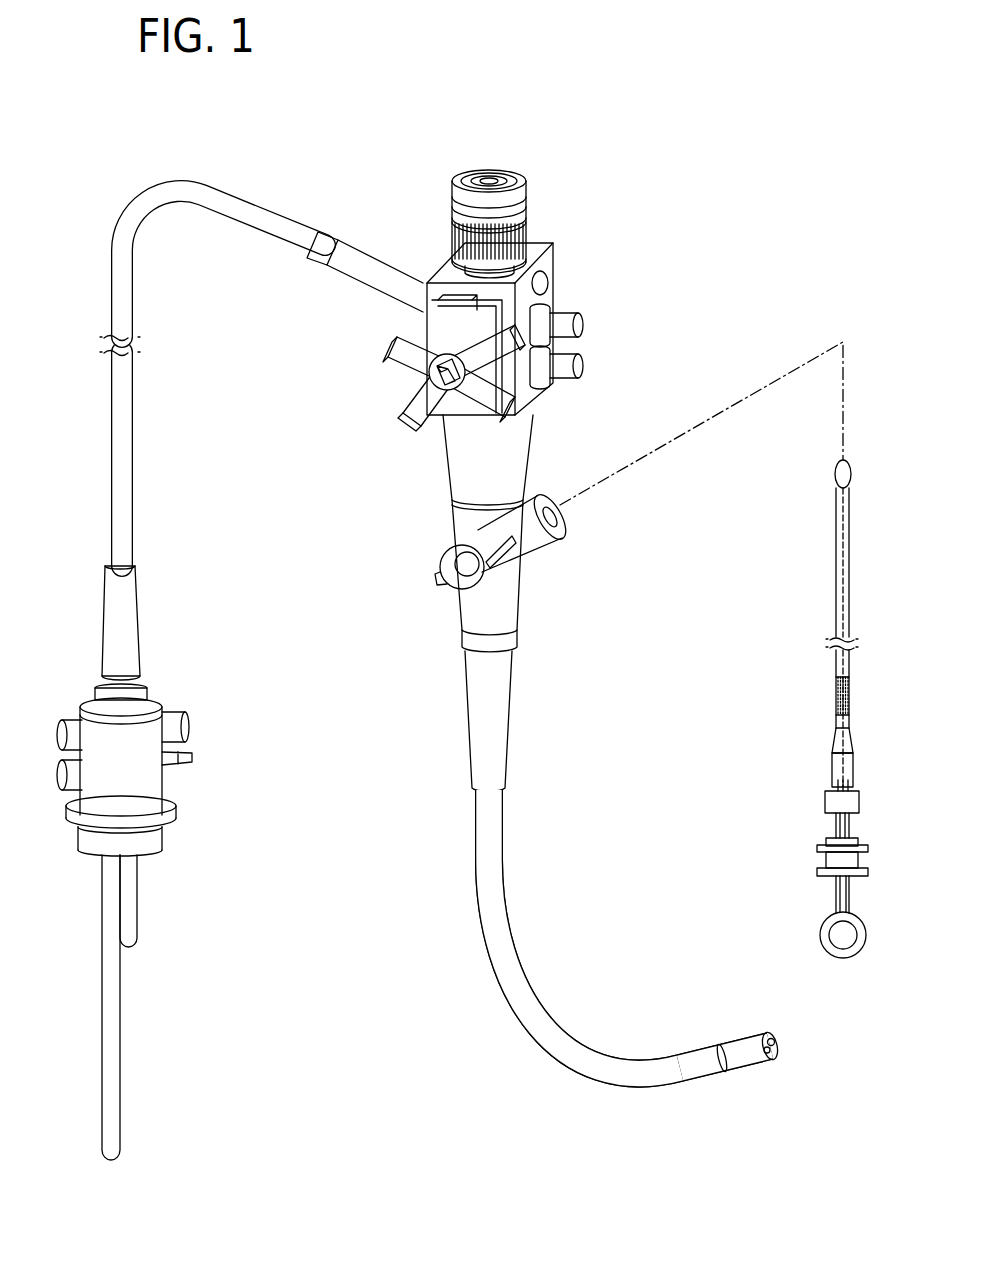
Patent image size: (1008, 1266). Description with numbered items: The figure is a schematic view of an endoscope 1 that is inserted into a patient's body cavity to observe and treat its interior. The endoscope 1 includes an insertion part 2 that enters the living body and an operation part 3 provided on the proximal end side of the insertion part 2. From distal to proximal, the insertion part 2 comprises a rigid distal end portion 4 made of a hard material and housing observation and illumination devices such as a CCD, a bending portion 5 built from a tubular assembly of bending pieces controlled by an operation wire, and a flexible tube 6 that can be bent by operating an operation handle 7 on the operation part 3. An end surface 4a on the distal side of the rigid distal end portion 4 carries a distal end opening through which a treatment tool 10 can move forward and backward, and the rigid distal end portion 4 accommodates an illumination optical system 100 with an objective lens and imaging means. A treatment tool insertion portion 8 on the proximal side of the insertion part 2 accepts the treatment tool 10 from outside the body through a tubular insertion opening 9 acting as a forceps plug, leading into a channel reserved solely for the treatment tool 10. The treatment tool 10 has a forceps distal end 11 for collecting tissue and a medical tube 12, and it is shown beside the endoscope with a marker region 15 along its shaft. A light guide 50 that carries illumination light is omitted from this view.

The endoscope 1 is at (608, 168).
The insertion part 2 is at (521, 1062).
The operation part 3 is at (592, 337).
The rigid distal end portion 4 is at (779, 1054).
The end surface 4a is at (776, 1034).
The bending portion 5 is at (741, 1075).
The tube 6 is at (597, 1086).
The operation handle 7 is at (407, 359).
The treatment tool insertion portion 8 is at (580, 533).
The insertion opening 9 is at (560, 517).
The treatment tool 10 is at (806, 636).
The forceps distal end 11 is at (833, 476).
The medical tube 12 is at (836, 585).
The marker portion 15 is at (836, 697).
The light guide 50 is at (656, 1068).
The illumination optical system 100 is at (730, 1048).